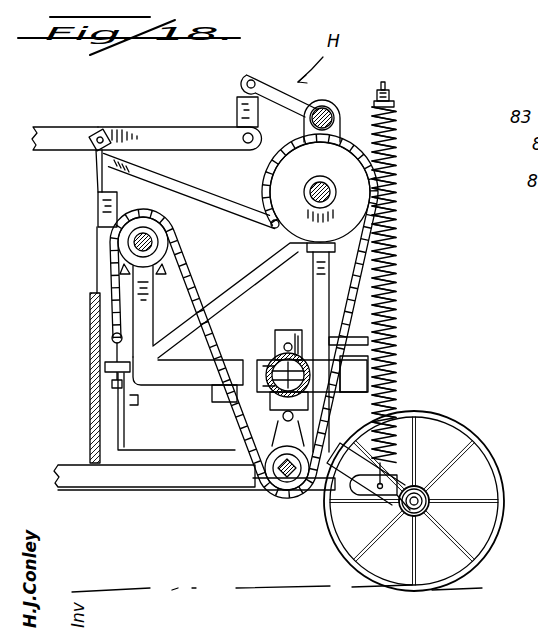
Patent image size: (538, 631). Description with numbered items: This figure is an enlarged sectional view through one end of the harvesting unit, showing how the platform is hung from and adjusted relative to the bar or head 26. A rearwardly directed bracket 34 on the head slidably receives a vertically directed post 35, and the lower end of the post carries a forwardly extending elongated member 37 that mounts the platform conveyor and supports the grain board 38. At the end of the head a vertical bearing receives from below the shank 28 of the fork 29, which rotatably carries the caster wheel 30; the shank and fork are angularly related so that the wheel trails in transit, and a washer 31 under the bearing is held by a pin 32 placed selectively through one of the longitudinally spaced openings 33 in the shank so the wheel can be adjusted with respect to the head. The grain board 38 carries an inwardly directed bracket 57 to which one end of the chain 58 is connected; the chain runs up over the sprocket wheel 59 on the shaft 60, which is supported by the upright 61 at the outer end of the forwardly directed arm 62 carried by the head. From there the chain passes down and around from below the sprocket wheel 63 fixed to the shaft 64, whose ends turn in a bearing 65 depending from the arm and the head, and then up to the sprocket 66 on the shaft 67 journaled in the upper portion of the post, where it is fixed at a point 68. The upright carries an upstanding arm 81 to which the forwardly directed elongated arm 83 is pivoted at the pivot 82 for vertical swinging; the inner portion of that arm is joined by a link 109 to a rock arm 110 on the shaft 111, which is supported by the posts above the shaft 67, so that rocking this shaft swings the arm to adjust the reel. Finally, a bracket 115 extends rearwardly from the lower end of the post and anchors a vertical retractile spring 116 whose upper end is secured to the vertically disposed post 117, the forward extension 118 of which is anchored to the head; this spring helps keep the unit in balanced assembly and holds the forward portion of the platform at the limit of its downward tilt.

The bar or head 26 is at (272, 360).
The shank 28 is at (282, 333).
The fork 29 is at (347, 462).
The caster wheel 30 is at (497, 528).
The washer 31 is at (275, 393).
The pin 32 is at (242, 455).
The openings 33 is at (292, 344).
The bracket 34 is at (358, 376).
The post 35 is at (330, 272).
The elongated member 37 is at (136, 486).
The grain board 38 is at (90, 396).
The bracket 57 is at (105, 346).
The chain 58 is at (110, 275).
The sprocket wheel 59 is at (126, 231).
The shaft 60 is at (150, 234).
The upright 61 is at (153, 298).
The arm 62 is at (160, 388).
The sprocket wheel 63 is at (280, 492).
The shaft 64 is at (300, 484).
The bearing 65 is at (245, 365).
The sprocket 66 is at (339, 152).
The shaft 67 is at (336, 188).
The fixing point 68 is at (270, 227).
The upstanding arm 81 is at (92, 160).
The pivot 82 is at (104, 128).
The elongated arm 83 is at (39, 144).
The link 109 is at (237, 110).
The rock arm 110 is at (268, 86).
The shaft 111 is at (324, 106).
The bracket 115 is at (360, 497).
The retractile spring 116 is at (397, 284).
The post 117 is at (389, 96).
The forward extension 118 is at (372, 338).